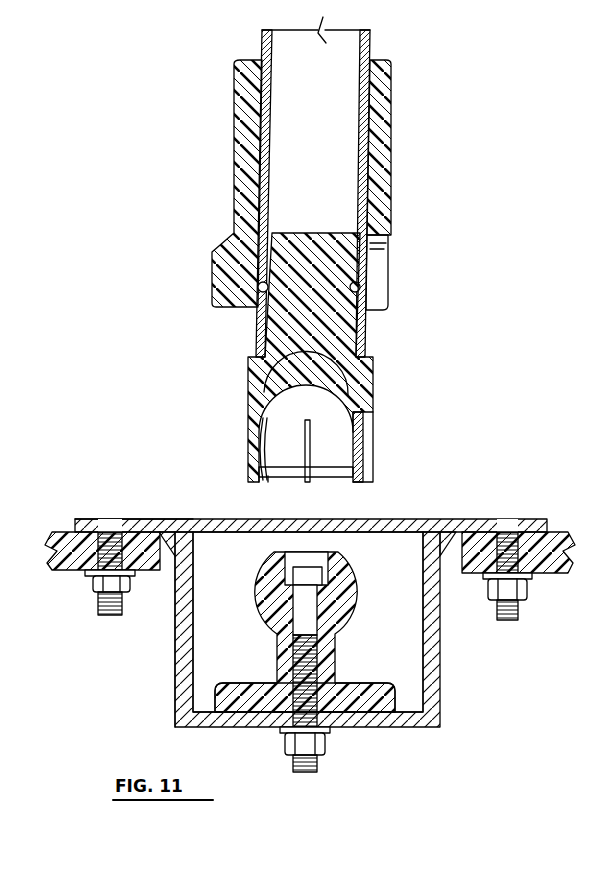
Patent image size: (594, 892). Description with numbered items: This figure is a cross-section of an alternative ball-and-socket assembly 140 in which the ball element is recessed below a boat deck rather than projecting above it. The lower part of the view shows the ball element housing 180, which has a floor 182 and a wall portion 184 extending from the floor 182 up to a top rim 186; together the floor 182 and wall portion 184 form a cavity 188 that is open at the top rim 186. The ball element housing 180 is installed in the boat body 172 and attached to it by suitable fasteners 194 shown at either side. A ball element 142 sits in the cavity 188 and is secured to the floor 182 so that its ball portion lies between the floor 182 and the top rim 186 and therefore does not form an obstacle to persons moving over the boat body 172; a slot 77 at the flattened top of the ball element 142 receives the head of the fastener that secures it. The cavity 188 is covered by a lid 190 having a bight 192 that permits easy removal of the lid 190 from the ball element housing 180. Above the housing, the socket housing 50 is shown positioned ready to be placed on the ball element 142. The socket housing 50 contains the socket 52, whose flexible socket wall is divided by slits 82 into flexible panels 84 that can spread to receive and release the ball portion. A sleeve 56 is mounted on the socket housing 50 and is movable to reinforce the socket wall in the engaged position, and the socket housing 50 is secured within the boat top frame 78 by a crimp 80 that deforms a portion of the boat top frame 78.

The ball-and-socket assembly 140 is at (162, 241).
The boat top frame 78 is at (371, 48).
The sleeve 56 is at (228, 219).
The crimp 80 is at (360, 290).
The socket housing 50 is at (379, 377).
The socket 52 is at (348, 450).
The slits 82 is at (262, 478).
The panels 84 is at (282, 471).
The lid 190 is at (384, 519).
The bight 192 is at (188, 519).
The top rim 186 is at (418, 521).
The boat body 172 is at (559, 530).
The fasteners 194 is at (127, 612).
The ball element housing 180 is at (450, 714).
The floor 182 is at (180, 697).
The cavity 188 is at (244, 647).
The ball element 142 is at (252, 604).
The wall portion 184 is at (420, 663).
The slot 77 is at (336, 591).